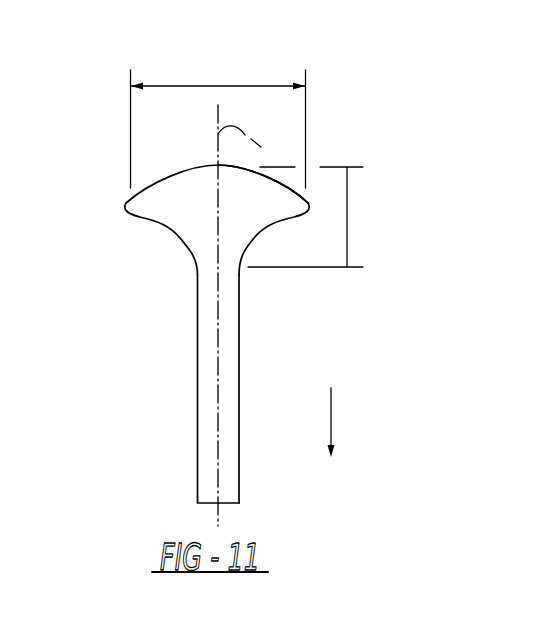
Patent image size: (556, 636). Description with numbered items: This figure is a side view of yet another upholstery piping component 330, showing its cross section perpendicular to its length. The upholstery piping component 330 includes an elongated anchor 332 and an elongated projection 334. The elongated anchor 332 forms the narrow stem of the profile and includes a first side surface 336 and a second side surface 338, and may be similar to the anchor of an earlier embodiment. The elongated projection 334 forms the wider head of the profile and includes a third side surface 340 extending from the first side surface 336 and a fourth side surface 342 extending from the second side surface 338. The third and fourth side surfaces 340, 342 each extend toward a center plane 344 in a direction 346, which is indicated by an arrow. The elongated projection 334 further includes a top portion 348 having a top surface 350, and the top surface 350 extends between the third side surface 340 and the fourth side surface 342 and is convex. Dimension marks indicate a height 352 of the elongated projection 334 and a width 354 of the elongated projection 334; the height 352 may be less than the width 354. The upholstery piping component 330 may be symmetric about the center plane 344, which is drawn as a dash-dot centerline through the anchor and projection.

The upholstery piping component 330 is at (104, 106).
The elongated anchor 332 is at (206, 433).
The elongated projection 334 is at (150, 202).
The first side surface 336 is at (198, 300).
The second side surface 338 is at (239, 357).
The third side surface 340 is at (160, 222).
The fourth side surface 342 is at (272, 223).
The center plane 344 is at (267, 153).
The direction 346 is at (333, 418).
The top portion 348 is at (263, 190).
The top surface 350 is at (178, 173).
The height 352 is at (348, 197).
The width 354 is at (232, 86).